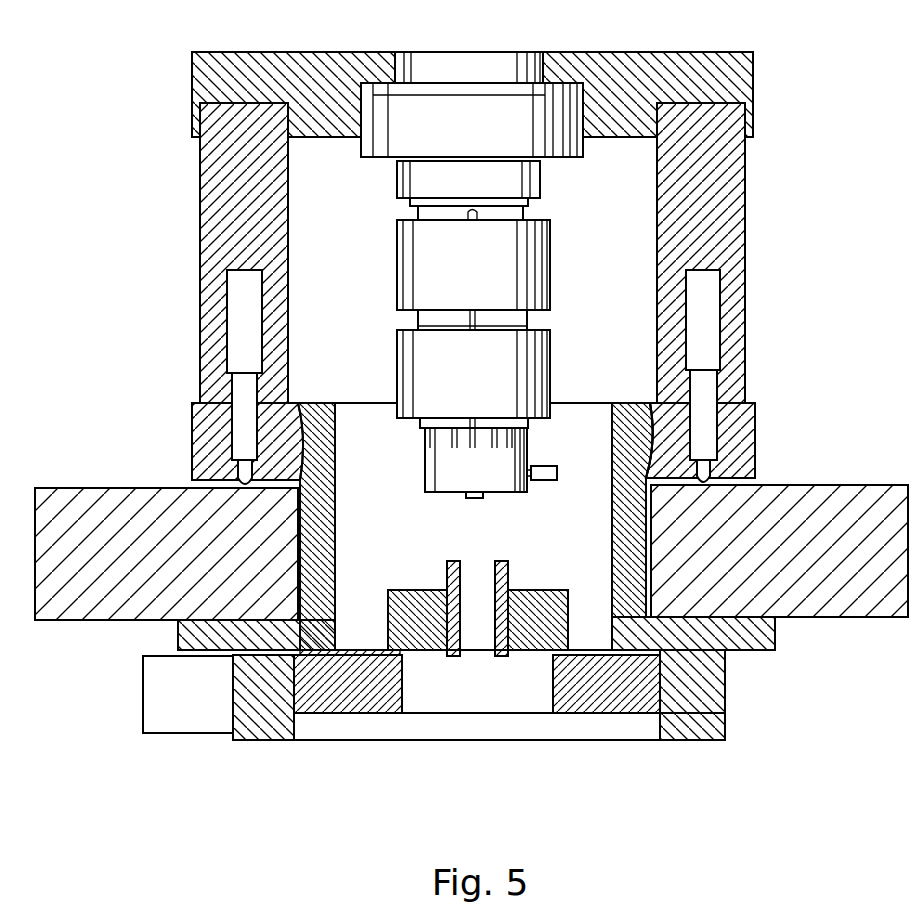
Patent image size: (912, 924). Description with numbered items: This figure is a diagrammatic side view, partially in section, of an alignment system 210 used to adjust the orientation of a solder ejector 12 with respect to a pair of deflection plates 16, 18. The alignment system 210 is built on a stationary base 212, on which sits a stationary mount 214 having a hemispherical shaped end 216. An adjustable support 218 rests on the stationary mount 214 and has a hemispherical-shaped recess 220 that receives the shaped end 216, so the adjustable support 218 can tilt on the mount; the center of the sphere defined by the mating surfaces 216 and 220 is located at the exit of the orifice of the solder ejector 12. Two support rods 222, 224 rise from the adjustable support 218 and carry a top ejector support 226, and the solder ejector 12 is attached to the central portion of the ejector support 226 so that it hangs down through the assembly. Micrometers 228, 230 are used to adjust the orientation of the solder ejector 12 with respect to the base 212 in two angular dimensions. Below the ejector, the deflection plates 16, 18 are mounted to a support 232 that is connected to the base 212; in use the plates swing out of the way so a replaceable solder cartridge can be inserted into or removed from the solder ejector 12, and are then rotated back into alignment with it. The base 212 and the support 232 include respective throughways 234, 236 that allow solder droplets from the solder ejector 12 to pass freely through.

The alignment system 210 is at (772, 75).
The top ejector support 226 is at (342, 52).
The solder ejector 12 is at (552, 252).
The support rod 222 is at (200, 240).
The support rod 224 is at (745, 230).
The micrometer 228 is at (235, 316).
The micrometer 230 is at (708, 312).
The throughway 234 is at (385, 435).
The hemispherical-shaped recess 220 is at (655, 412).
The hemispherical shaped end 216 is at (653, 430).
The adjustable support 218 is at (757, 430).
The stationary base 212 is at (78, 606).
The stationary mount 214 is at (613, 520).
The deflection plate 18 is at (447, 570).
The deflection plate 16 is at (508, 568).
The support 232 is at (726, 684).
The throughway 236 is at (508, 700).